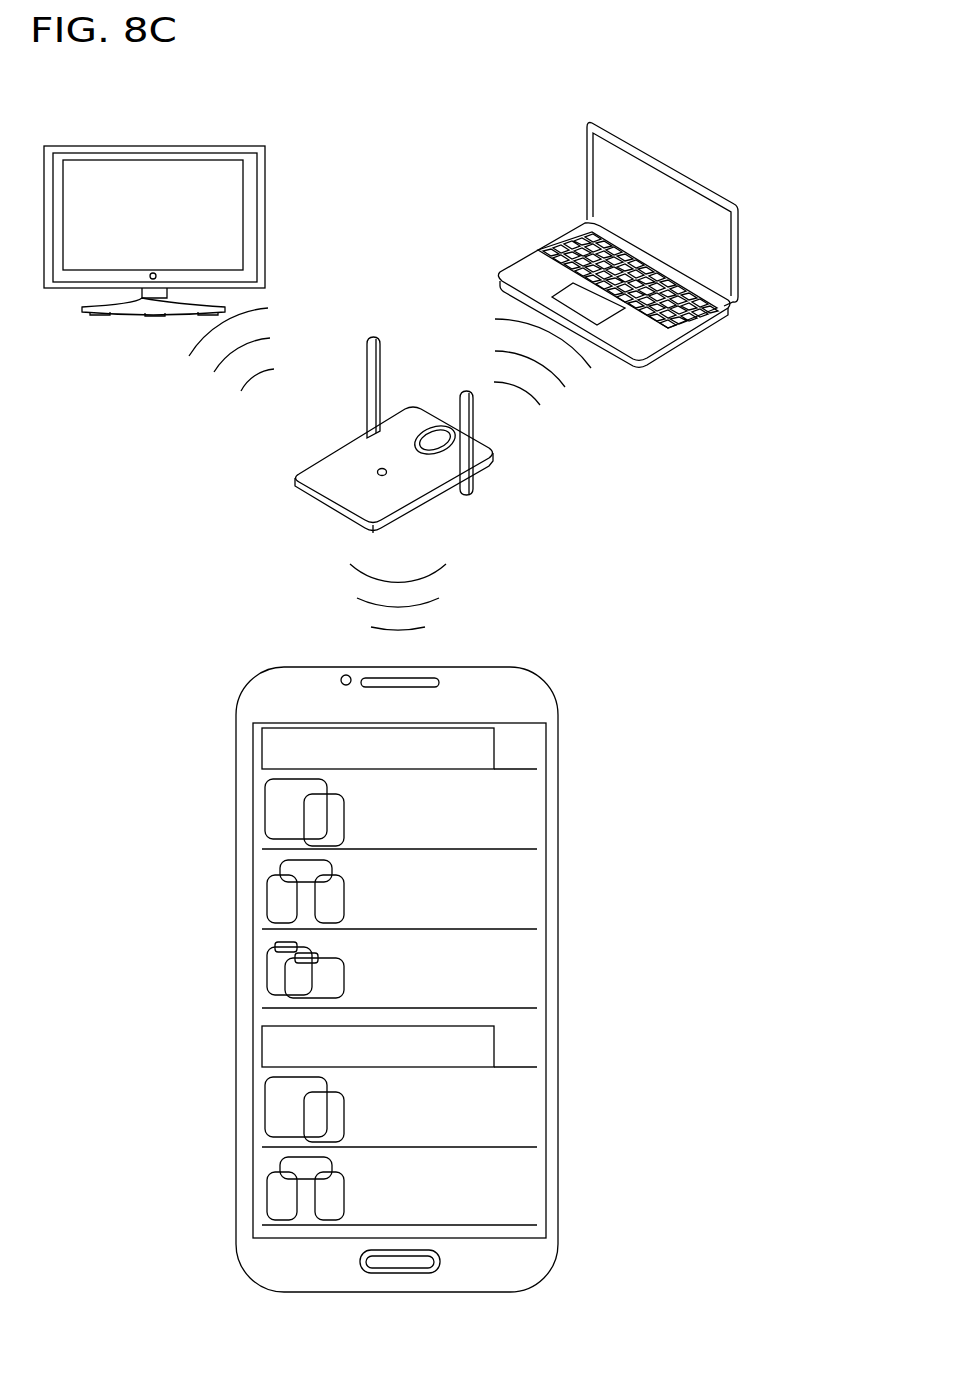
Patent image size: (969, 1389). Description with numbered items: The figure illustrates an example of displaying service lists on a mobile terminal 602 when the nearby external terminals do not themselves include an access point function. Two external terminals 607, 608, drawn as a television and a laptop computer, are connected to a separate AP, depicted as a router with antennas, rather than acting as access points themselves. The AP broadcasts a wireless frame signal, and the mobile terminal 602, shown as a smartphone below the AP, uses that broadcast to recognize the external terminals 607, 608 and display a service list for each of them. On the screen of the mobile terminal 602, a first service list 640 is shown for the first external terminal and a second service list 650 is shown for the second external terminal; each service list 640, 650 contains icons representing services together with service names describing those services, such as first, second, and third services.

The external terminal 607 is at (153, 146).
The external terminal 608 is at (664, 157).
The element AP is at (477, 478).
The mobile terminal 602 is at (450, 979).
The service list 640 is at (503, 767).
The service list 650 is at (503, 1065).